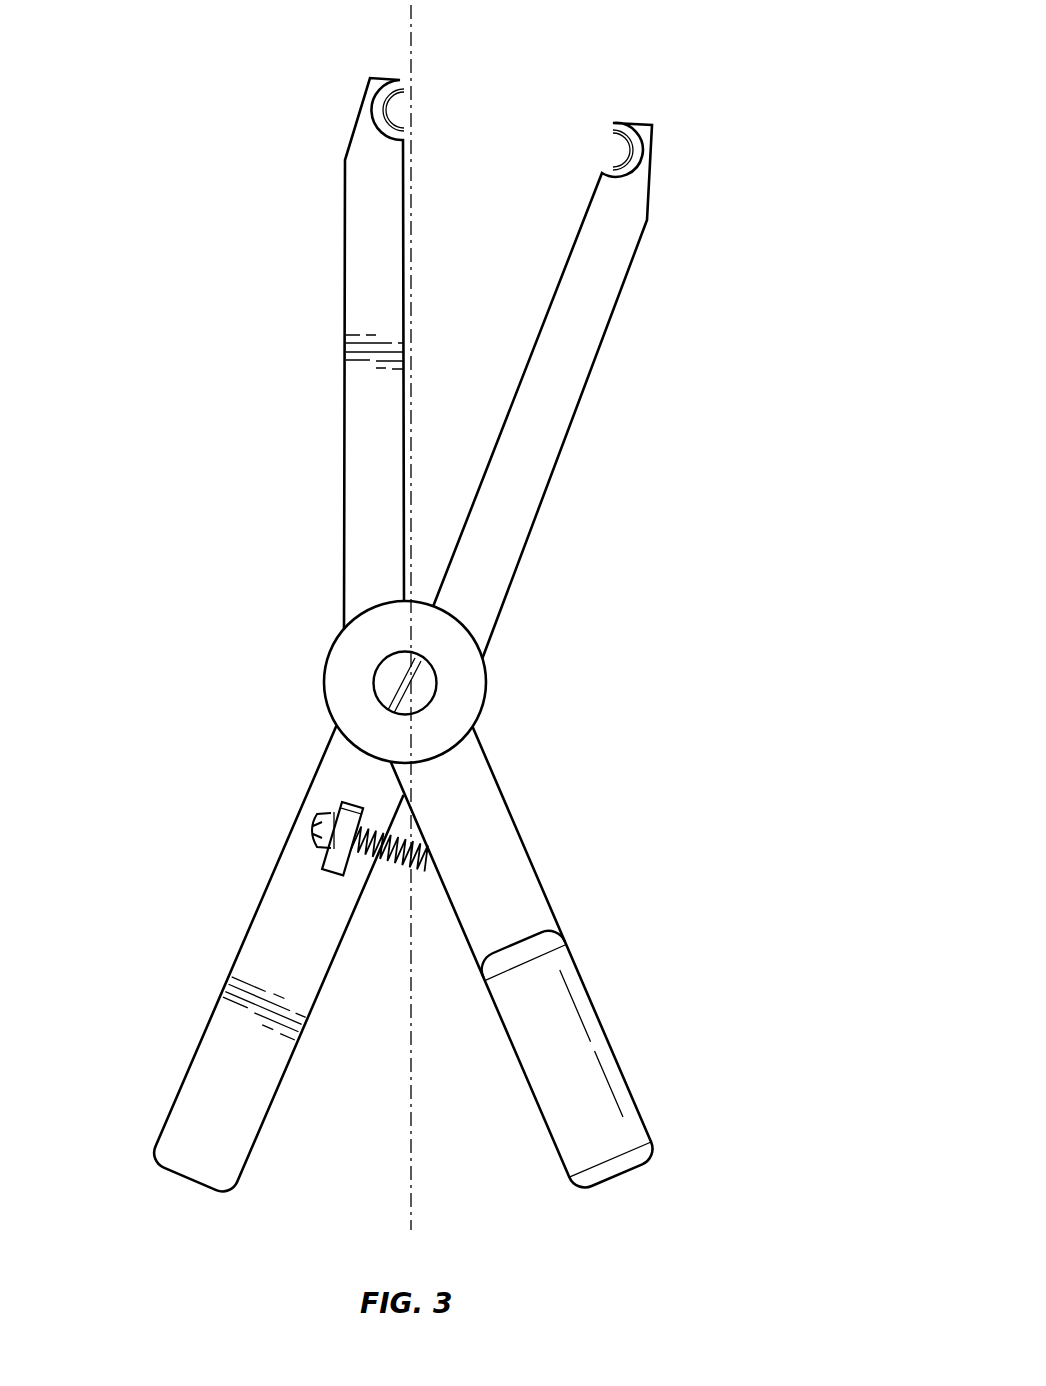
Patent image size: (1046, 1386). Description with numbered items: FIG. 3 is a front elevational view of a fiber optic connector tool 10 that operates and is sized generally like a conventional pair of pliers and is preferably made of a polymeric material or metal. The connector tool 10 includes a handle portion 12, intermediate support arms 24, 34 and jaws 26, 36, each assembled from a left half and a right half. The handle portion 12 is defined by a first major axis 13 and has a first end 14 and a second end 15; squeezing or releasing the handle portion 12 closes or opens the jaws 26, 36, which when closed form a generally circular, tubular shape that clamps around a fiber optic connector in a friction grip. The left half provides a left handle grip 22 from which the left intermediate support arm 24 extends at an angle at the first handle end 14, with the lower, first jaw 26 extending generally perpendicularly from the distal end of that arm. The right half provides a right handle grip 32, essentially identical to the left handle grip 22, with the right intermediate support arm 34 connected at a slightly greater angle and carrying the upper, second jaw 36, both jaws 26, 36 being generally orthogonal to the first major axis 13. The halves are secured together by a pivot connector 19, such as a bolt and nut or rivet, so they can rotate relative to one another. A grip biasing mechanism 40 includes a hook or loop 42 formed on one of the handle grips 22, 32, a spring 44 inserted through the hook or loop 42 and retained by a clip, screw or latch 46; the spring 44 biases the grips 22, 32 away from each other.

The connector tool 10 is at (454, 632).
The handle portion 12 is at (566, 975).
The first major axis 13 is at (417, 55).
The first end 14 is at (448, 682).
The second end 15 is at (566, 975).
The pivot connector 19 is at (425, 688).
The left handle grip 22 is at (205, 1058).
The left intermediate support arm 24 is at (585, 390).
The first jaw 26 is at (640, 165).
The right handle grip 32 is at (605, 1057).
The right intermediate support arm 34 is at (331, 353).
The second jaw 36 is at (368, 112).
The grip biasing mechanism 40 is at (316, 851).
The hook or loop 42 is at (320, 858).
The spring 44 is at (397, 870).
The clip, screw or latch 46 is at (312, 830).